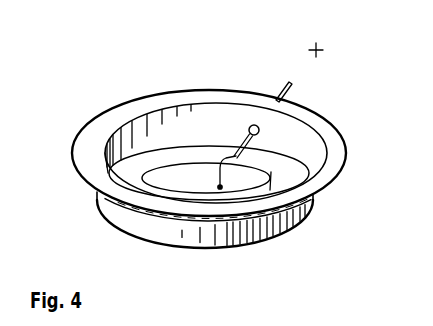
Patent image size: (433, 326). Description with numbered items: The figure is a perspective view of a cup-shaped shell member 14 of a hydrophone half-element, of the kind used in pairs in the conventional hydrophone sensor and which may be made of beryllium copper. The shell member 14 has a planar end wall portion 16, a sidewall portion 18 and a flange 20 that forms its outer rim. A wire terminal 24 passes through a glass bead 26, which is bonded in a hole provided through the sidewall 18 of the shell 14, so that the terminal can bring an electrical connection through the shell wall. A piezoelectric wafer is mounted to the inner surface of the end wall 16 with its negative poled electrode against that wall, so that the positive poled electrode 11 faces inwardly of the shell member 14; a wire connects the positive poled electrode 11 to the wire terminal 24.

The positive poled electrode 11 is at (178, 185).
The shell member 14 is at (89, 128).
The end wall portion 16 is at (340, 152).
The sidewall portion 18 is at (140, 227).
The flange 20 is at (197, 100).
The wire terminal 24 is at (277, 96).
The glass bead 26 is at (262, 127).